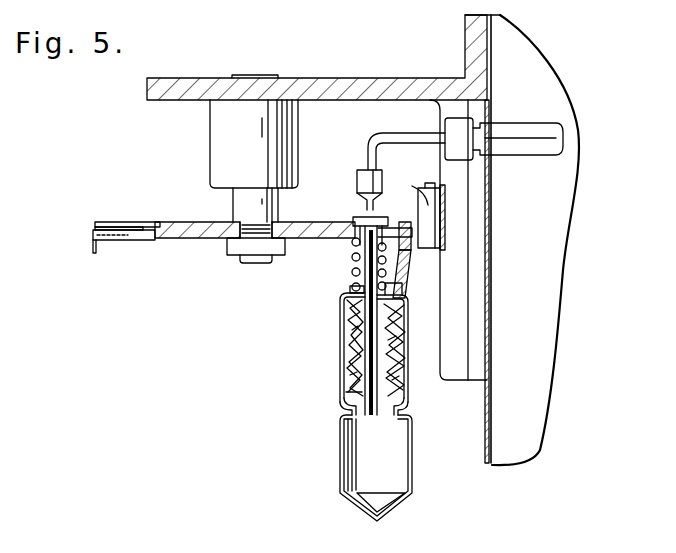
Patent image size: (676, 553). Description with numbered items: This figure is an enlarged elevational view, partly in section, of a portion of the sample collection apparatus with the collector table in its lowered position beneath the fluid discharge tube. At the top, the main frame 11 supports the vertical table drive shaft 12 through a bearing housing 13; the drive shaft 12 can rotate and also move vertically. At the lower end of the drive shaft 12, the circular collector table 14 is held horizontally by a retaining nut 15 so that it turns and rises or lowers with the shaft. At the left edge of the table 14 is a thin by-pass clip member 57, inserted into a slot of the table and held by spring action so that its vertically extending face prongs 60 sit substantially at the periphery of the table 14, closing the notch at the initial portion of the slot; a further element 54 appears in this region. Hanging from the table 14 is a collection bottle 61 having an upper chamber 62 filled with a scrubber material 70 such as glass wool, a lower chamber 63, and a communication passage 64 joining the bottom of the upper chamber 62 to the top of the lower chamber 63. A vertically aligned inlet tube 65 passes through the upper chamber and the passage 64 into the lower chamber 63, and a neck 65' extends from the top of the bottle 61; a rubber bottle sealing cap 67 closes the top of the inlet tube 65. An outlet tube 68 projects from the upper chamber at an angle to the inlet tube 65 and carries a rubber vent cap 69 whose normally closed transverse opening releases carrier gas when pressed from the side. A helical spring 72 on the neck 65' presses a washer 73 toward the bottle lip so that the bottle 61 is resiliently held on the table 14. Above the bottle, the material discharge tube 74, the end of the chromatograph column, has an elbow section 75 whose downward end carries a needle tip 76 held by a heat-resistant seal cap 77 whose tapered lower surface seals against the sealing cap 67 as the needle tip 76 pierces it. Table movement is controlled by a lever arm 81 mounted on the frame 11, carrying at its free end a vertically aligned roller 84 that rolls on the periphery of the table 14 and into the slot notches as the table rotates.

The main frame 11 is at (180, 95).
The table drive shaft 12 is at (240, 202).
The bearing housing 13 is at (222, 147).
The collector table 14 is at (198, 237).
The retaining nut 15 is at (240, 248).
The contact strip 54 is at (110, 222).
The by-pass clip member 57 is at (92, 234).
The face prongs 60 is at (93, 252).
The collection bottle 61 is at (338, 327).
The upper chamber 62 is at (352, 344).
The lower chamber 63 is at (360, 473).
The communication passage 64 is at (360, 414).
The inlet tube 65 is at (404, 304).
The neck 65' is at (333, 264).
The bottle sealing cap 67 is at (382, 219).
The outlet tube 68 is at (402, 283).
The vent cap 69 is at (406, 248).
The scrubber material 70 is at (354, 375).
The helical spring 72 is at (356, 288).
The washer 73 is at (355, 239).
The material discharge tube 74 is at (512, 123).
The elbow section 75 is at (390, 136).
The needle tip 76 is at (365, 205).
The seal cap 77 is at (380, 178).
The lever arm 81 is at (450, 211).
The roller 84 is at (408, 188).